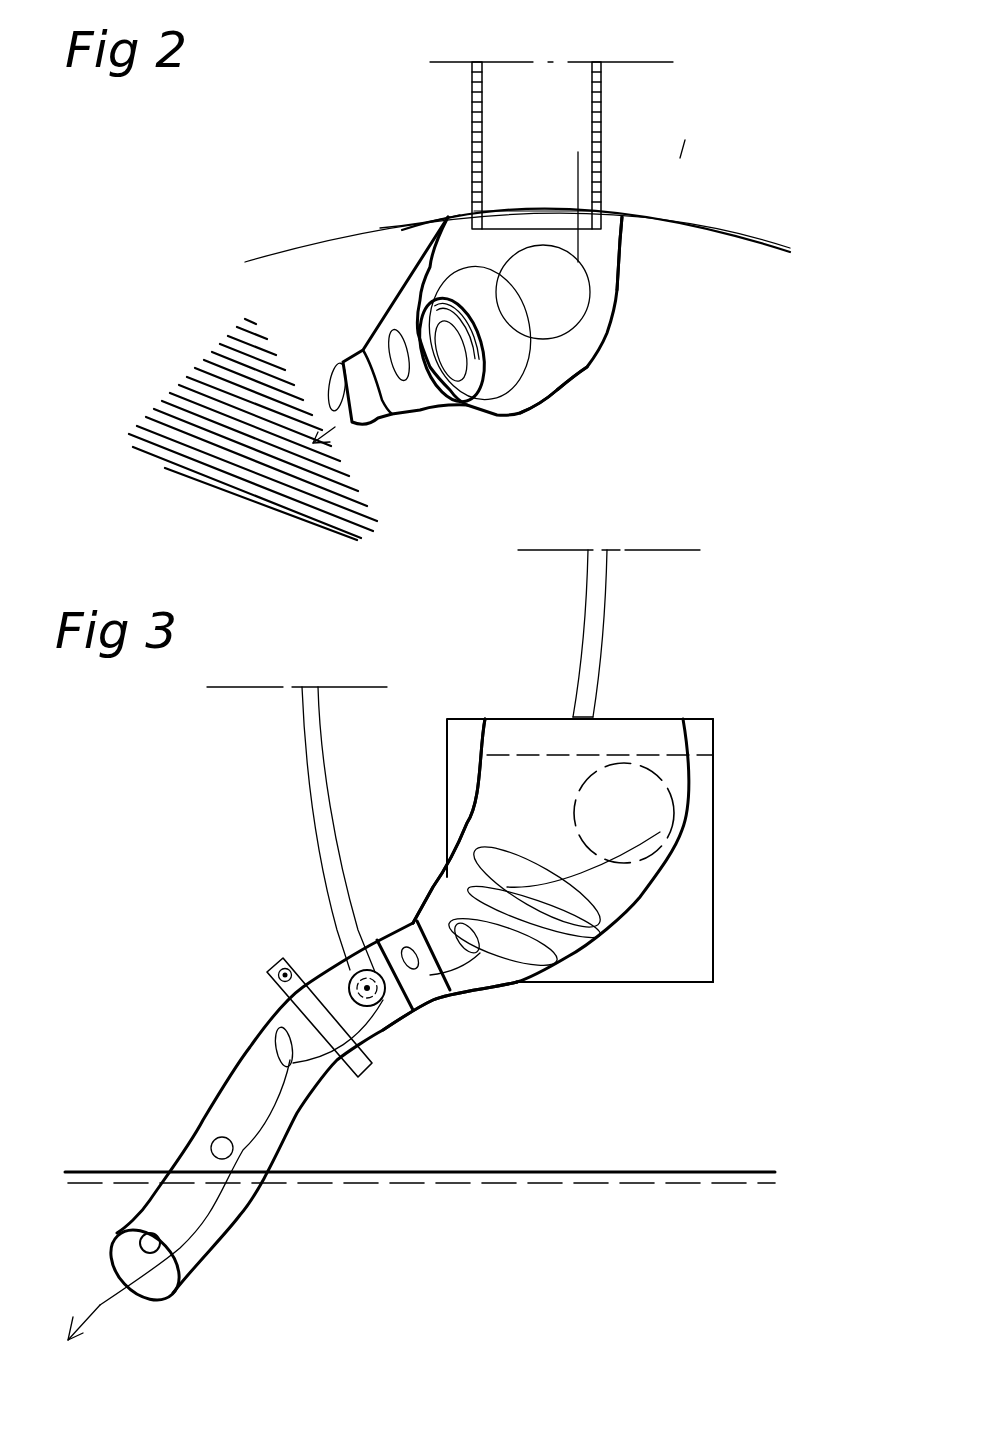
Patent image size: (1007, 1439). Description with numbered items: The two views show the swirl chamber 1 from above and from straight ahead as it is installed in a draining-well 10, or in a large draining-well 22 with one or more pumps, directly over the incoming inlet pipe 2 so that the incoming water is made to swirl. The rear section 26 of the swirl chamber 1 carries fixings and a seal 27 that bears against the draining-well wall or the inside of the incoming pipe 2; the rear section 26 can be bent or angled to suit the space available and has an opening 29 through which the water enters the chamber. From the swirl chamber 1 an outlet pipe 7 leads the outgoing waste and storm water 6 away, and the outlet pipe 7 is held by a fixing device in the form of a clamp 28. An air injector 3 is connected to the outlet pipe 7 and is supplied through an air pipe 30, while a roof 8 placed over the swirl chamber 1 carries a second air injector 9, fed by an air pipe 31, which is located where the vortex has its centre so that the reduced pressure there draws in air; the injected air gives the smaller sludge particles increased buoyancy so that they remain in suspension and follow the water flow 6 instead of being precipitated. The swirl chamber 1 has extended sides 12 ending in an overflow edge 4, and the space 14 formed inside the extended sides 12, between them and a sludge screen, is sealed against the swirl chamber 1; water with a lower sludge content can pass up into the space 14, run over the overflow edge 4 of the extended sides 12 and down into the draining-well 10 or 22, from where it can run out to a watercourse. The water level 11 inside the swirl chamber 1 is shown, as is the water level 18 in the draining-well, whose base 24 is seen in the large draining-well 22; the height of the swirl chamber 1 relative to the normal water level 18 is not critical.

In FIG. 2, the swirl chamber 1 is at (408, 308).
In FIG. 3, the swirl chamber 1 is at (460, 898).
In FIG. 2, the inlet pipe 2 is at (567, 106).
In FIG. 3, the inlet pipe 2 is at (615, 782).
In FIG. 3, the air injector on outlet pipe 3 is at (383, 1003).
In FIG. 2, the overflow edge 4 is at (558, 388).
In FIG. 2, the outgoing waste and storm water 6 is at (335, 427).
In FIG. 3, the outgoing waste and storm water 6 is at (100, 1305).
In FIG. 2, the outlet pipe 7 is at (378, 417).
In FIG. 3, the outlet pipe 7 is at (252, 1068).
In FIG. 3, the swirl chamber roof 8 is at (510, 718).
In FIG. 3, the air injector on swirl chamber 9 is at (585, 717).
In FIG. 2, the draining-well 10 is at (325, 246).
In FIG. 3, the draining-well 10 is at (468, 1097).
In FIG. 3, the swirl chamber water level 11 is at (658, 755).
In FIG. 2, the swirl chamber extended sides 12 is at (616, 286).
In FIG. 3, the space in swirl chamber 14 is at (508, 813).
In FIG. 3, the water level in draining-well 18 is at (625, 1168).
In FIG. 2, the large draining-well 22 is at (486, 217).
In FIG. 3, the large draining-well 22 is at (493, 1041).
In FIG. 2, the draining-well base 24 is at (228, 405).
In FIG. 2, the rear section 26 is at (424, 226).
In FIG. 3, the rear section 26 is at (660, 955).
In FIG. 2, the seal 27 is at (474, 211).
In FIG. 3, the seal 27 is at (713, 742).
In FIG. 3, the fixing device 28 is at (283, 972).
In FIG. 2, the opening in rear section 29 is at (537, 211).
In FIG. 3, the opening in rear section 29 is at (665, 838).
In FIG. 3, the air pipe to outlet pipe air injector 30 is at (318, 813).
In FIG. 3, the air pipe to roof air injector 31 is at (598, 607).